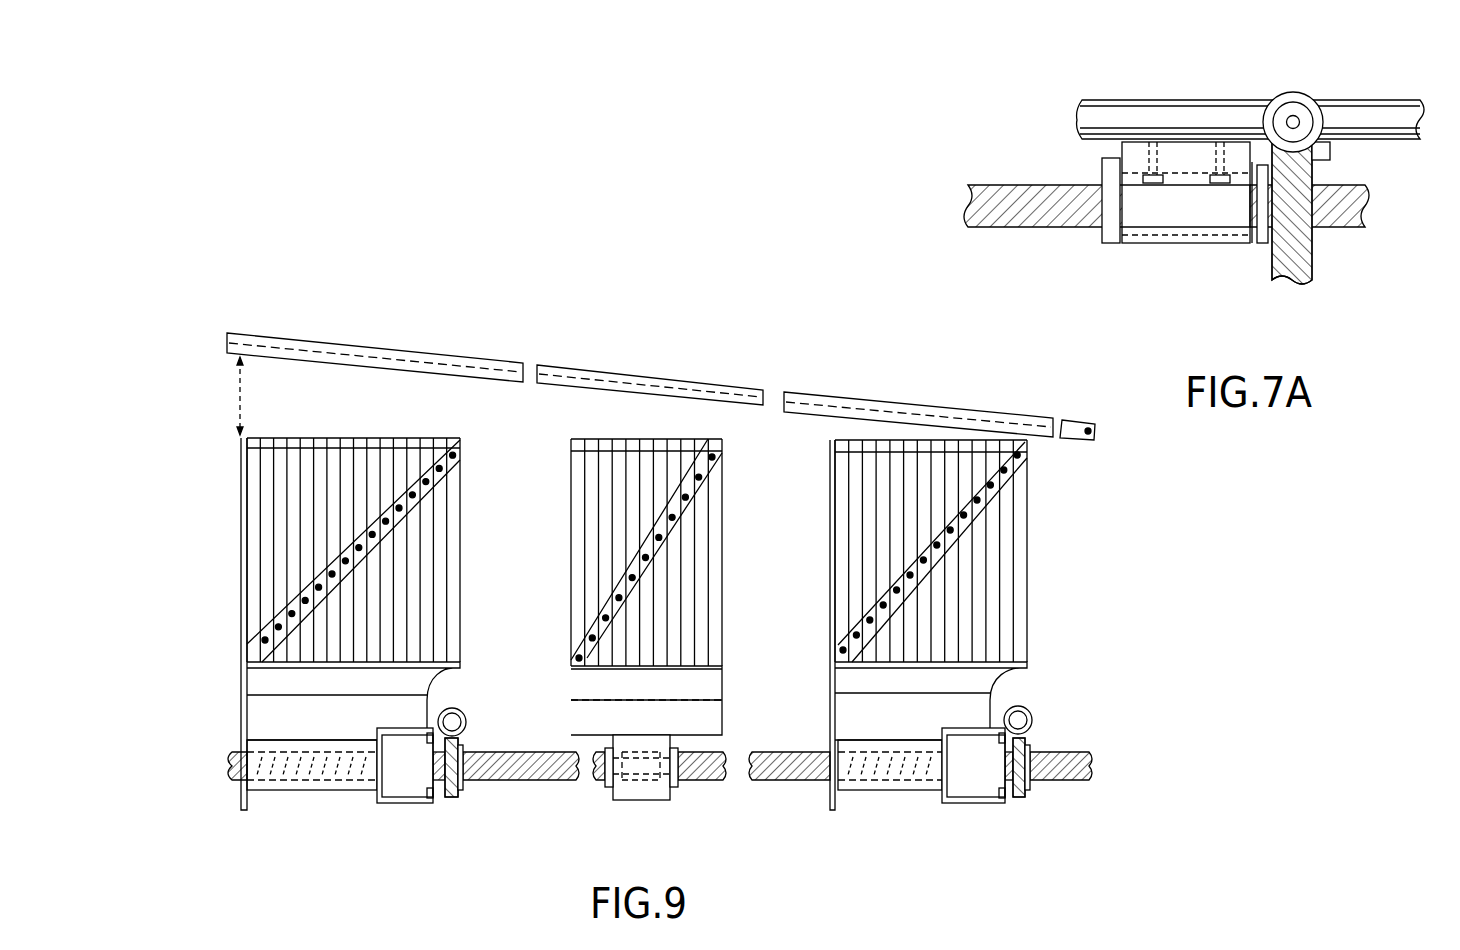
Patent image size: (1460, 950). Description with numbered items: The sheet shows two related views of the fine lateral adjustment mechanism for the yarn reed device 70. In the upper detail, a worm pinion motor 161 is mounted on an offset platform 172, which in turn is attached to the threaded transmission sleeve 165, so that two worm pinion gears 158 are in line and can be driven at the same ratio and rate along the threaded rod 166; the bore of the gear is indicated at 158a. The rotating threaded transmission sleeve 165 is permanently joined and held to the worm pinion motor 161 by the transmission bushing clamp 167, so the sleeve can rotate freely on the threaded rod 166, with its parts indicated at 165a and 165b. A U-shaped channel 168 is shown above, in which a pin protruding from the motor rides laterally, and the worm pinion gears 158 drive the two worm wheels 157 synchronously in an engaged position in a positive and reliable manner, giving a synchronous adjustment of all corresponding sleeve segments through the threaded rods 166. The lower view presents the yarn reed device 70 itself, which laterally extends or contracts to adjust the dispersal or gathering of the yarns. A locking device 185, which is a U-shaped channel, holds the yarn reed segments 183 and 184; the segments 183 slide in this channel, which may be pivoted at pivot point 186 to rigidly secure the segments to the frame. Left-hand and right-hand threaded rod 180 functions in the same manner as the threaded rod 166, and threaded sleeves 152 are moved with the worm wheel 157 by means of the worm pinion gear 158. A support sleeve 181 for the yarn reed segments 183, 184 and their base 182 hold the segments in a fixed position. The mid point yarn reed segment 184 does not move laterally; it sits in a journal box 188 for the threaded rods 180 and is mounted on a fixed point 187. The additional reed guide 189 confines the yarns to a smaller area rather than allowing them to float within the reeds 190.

In FIG. 9, the yarn reed device 70 is at (218, 652).
In FIG. 9, the threaded sleeve 152 is at (433, 804).
In FIG. 7A, the worm wheel 157 is at (1312, 265).
In FIG. 9, the worm wheel 157 is at (462, 745).
In FIG. 7A, the worm pinion gear 158 is at (1278, 112).
In FIG. 9, the worm pinion gear 158 is at (466, 718).
In FIG. 7A, the bearing bore 158a is at (1298, 118).
In FIG. 7A, the worm pinion motor 161 is at (1283, 87).
In FIG. 7A, the threaded transmission sleeve 165 is at (1102, 245).
In FIG. 7A, the bracket bolts 165a is at (1112, 245).
In FIG. 7A, the bracket end plate 165b is at (1262, 245).
In FIG. 7A, the threaded rod 166 is at (1370, 210).
In FIG. 7A, the transmission bushing clamp 167 is at (1205, 245).
In FIG. 7A, the U-shaped channel 168 is at (1408, 100).
In FIG. 7A, the offset platform 172 is at (1338, 151).
In FIG. 9, the threaded rod 180 is at (520, 781).
In FIG. 9, the support sleeve 181 is at (280, 791).
In FIG. 9, the base 182 is at (453, 670).
In FIG. 9, the yarn reed segment 183 is at (460, 445).
In FIG. 9, the mid point yarn reed segment 184 is at (722, 472).
In FIG. 9, the locking device 185 is at (297, 360).
In FIG. 9, the pivot point 186 is at (1090, 433).
In FIG. 9, the fixed point 187 is at (652, 802).
In FIG. 9, the journal box 188 is at (608, 790).
In FIG. 9, the additional reed guide 189 is at (460, 455).
In FIG. 9, the reeds 190 is at (460, 522).